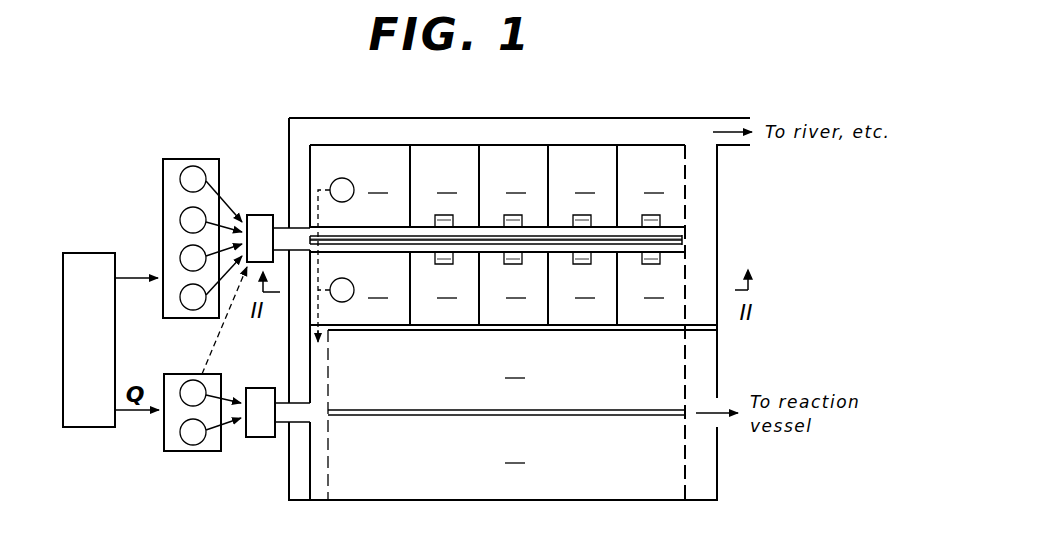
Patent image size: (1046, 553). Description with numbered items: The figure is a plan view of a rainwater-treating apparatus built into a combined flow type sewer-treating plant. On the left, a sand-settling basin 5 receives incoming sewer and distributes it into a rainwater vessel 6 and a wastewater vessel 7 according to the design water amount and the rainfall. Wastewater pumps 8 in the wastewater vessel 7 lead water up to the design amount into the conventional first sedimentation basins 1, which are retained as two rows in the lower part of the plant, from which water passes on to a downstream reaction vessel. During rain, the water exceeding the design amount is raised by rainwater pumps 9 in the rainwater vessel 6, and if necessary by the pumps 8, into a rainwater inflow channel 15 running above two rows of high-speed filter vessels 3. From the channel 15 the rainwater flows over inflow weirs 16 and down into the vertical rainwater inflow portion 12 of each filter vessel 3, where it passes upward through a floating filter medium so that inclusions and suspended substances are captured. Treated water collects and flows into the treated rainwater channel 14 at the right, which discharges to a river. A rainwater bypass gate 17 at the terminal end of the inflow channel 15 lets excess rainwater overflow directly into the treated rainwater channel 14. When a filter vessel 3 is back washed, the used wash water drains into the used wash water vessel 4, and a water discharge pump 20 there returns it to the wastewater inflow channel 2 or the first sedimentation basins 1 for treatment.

The first sedimentation basin 1 is at (506, 415).
The wastewater inflow channel 2 is at (319, 397).
The high-speed filter vessel 3 is at (547, 235).
The used wash water vessel 4 is at (360, 235).
The sand-settling basin 5 is at (100, 253).
The rainwater vessel 6 is at (190, 238).
The wastewater vessel 7 is at (190, 423).
The wastewater pump 8 is at (186, 382).
The rainwater pump 9 is at (208, 178).
The rainwater inflow portion 12 is at (523, 214).
The treated rainwater channel 14 is at (697, 186).
The rainwater inflow channel 15 is at (425, 235).
The inflow weir 16 is at (455, 214).
The rainwater bypass gate 17 is at (683, 241).
The water discharge pump 20 is at (342, 178).